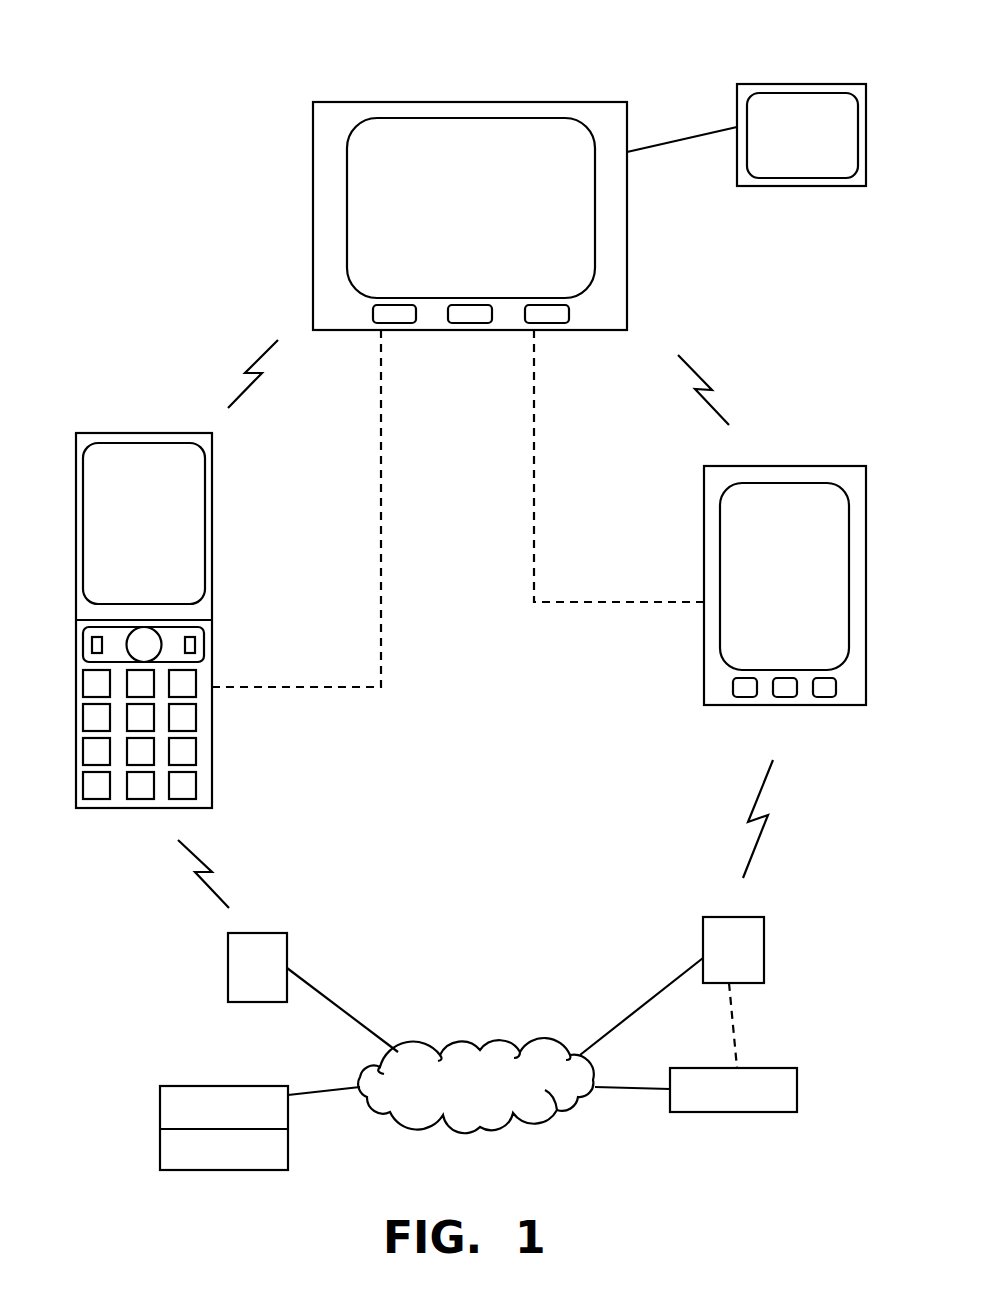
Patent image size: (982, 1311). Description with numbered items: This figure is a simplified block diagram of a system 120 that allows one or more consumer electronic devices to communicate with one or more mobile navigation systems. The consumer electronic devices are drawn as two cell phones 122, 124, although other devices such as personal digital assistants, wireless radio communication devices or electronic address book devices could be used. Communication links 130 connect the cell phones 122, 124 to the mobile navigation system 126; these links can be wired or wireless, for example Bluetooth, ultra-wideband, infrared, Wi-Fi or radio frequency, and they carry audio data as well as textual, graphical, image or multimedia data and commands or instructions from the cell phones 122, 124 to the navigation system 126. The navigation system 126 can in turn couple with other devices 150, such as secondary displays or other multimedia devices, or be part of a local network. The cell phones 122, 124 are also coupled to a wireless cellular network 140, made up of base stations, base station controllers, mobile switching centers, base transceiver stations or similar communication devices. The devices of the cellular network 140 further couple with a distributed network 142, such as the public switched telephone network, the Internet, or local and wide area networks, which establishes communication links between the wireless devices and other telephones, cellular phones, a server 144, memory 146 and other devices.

The system 120 is at (185, 47).
The cell phone 122 is at (76, 519).
The cell phone 124 is at (866, 543).
The mobile navigation system 126 is at (505, 101).
The communication links 130 is at (470, 508).
The cellular network 140 is at (228, 975).
The distributed network 142 is at (500, 1052).
The server 144 is at (160, 1102).
The memory 146 is at (160, 1154).
The other devices 150 is at (790, 83).